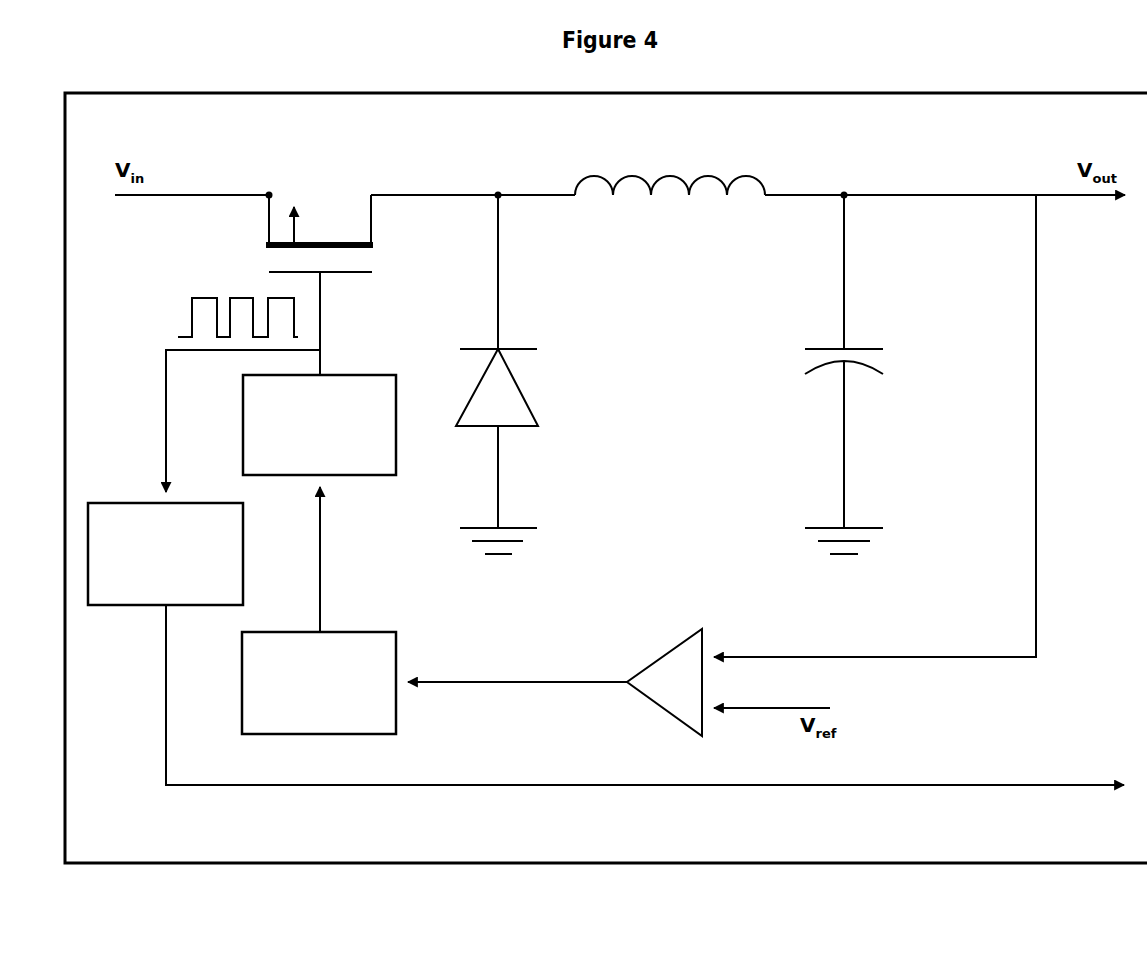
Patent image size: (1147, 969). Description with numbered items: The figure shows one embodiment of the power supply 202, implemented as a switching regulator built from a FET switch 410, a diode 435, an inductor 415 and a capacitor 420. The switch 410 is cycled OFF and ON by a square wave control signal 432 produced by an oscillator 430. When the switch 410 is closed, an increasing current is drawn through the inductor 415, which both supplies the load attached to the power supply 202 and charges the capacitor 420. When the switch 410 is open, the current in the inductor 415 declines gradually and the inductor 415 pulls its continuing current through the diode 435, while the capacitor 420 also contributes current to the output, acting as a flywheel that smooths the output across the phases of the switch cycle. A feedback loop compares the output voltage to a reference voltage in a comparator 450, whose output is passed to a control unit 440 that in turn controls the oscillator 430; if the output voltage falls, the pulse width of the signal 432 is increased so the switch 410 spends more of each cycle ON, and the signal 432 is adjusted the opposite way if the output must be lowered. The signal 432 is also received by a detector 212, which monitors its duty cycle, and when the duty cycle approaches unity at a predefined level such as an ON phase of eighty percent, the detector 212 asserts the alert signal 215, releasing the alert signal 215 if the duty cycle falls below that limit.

The power supply unit 202 is at (606, 478).
The FET switch 410 is at (334, 259).
The inductor 415 is at (670, 163).
The capacitor 420 is at (799, 374).
The diode 435 is at (553, 374).
The square wave control signal 432 is at (205, 388).
The oscillator 430 is at (319, 425).
The detector 212 is at (165, 554).
The control unit 440 is at (319, 610).
The comparator 450 is at (619, 689).
The alert signal 215 is at (649, 695).